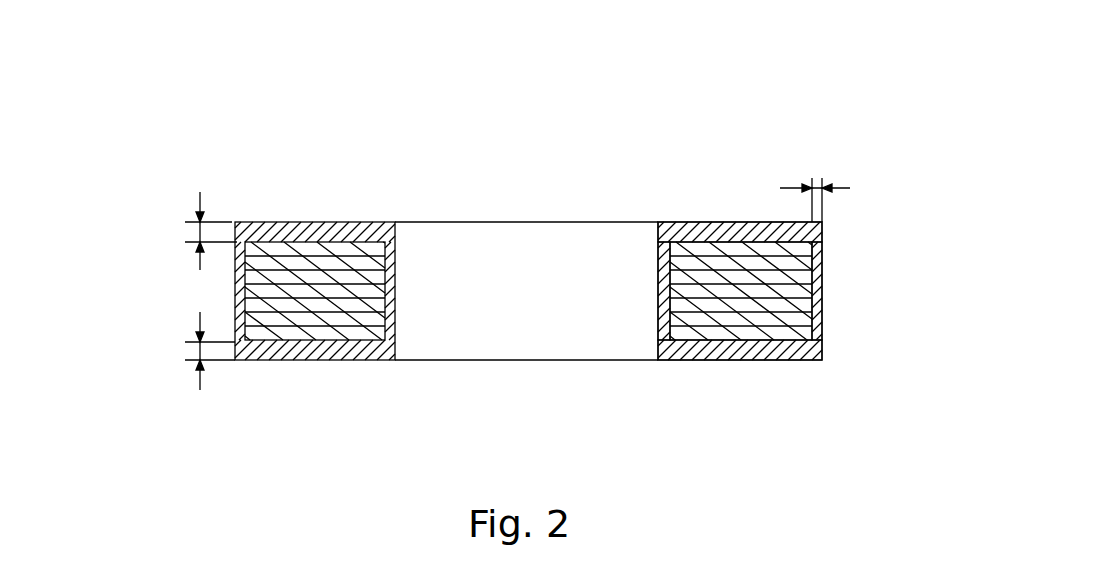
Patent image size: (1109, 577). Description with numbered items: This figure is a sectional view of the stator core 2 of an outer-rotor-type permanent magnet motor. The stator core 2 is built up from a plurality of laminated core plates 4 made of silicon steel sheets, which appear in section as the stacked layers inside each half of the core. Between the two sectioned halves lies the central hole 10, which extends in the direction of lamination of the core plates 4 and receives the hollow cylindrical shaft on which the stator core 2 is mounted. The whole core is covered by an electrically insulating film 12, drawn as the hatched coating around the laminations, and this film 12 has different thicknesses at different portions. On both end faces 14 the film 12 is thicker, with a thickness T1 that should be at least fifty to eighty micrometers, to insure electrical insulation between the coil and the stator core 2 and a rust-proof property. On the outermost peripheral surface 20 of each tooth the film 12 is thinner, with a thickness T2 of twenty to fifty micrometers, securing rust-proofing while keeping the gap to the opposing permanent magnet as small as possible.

The stator core 2 is at (763, 340).
The laminated core plates 4 is at (787, 280).
The central hole 10 is at (397, 305).
The electrically insulating film 12 is at (692, 222).
The end faces 14 is at (737, 222).
The outermost peripheral surface 20 is at (813, 313).
The thickness of the electrical insulating film T1 is at (198, 232).
The thickness of the electrical insulating film on the peripheral surface T2 is at (812, 182).